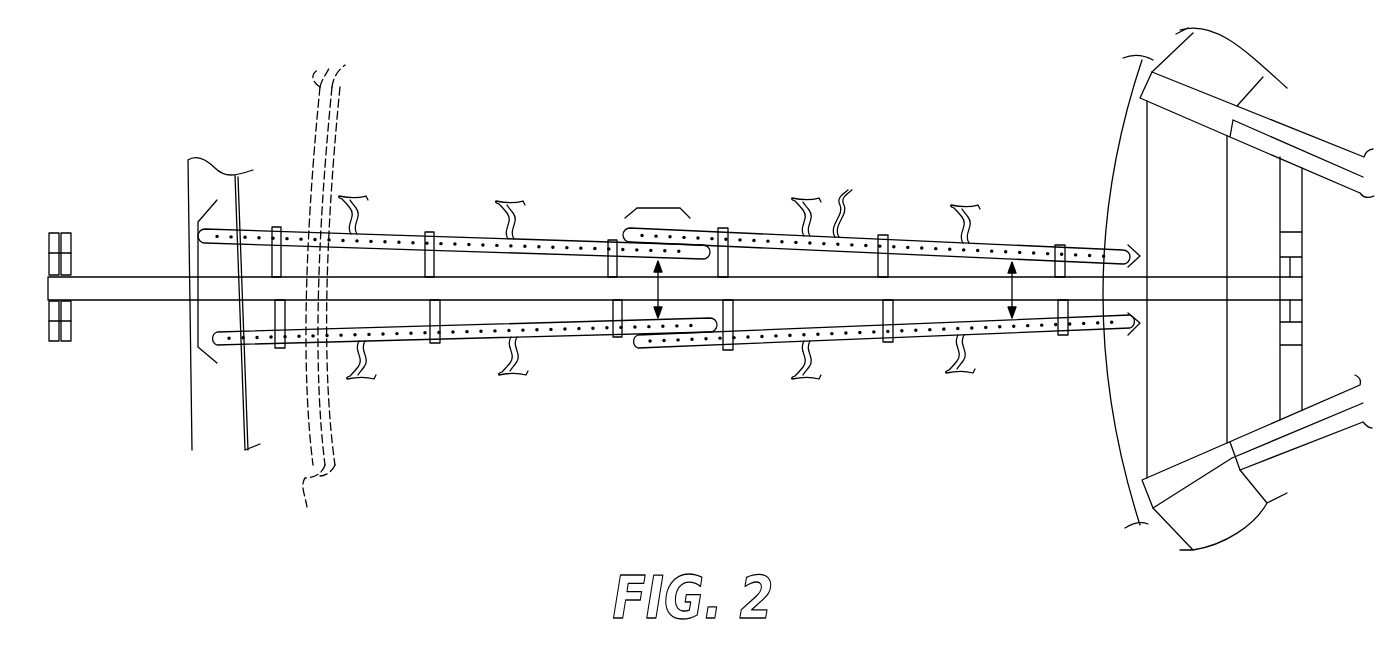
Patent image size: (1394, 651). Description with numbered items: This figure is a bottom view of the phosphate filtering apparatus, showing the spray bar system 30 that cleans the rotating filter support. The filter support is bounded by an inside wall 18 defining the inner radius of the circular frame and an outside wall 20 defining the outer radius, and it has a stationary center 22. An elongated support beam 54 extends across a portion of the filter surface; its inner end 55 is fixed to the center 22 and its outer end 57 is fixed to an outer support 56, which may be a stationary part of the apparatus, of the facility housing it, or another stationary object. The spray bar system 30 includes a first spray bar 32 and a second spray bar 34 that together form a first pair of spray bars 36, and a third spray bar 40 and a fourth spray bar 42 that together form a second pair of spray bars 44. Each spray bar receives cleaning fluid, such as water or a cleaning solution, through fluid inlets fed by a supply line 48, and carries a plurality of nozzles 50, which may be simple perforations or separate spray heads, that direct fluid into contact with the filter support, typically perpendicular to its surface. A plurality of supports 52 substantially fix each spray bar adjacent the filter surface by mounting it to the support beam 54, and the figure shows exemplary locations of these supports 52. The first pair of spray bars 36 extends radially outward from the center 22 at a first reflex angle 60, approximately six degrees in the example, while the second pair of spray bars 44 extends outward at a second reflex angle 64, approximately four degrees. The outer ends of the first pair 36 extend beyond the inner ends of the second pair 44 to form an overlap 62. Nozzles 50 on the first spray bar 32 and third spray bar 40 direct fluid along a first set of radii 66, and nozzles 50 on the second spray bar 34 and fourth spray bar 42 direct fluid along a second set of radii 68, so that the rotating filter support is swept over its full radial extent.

The inside wall 18 is at (1130, 107).
The outside wall 20 is at (240, 176).
The center 22 is at (1237, 47).
The spray bar system 30 is at (570, 457).
The first spray bar 32 is at (905, 238).
The second spray bar 34 is at (910, 340).
The first pair of spray bars 36 is at (1150, 277).
The third spray bar 40 is at (467, 234).
The fourth spray bar 42 is at (473, 343).
The second pair of spray bars 44 is at (192, 315).
The supply line 48 is at (972, 215).
The nozzles 50 is at (847, 199).
The supports 52 is at (735, 250).
The support beam 54 is at (130, 285).
The inner end 55 is at (1280, 291).
The outer support 56 is at (50, 342).
The outer end 57 is at (50, 282).
The first reflex angle 60 is at (1012, 292).
The overlap 62 is at (660, 205).
The second reflex angle 64 is at (655, 290).
The first set of radii 66 is at (330, 69).
The second set of radii 68 is at (301, 496).